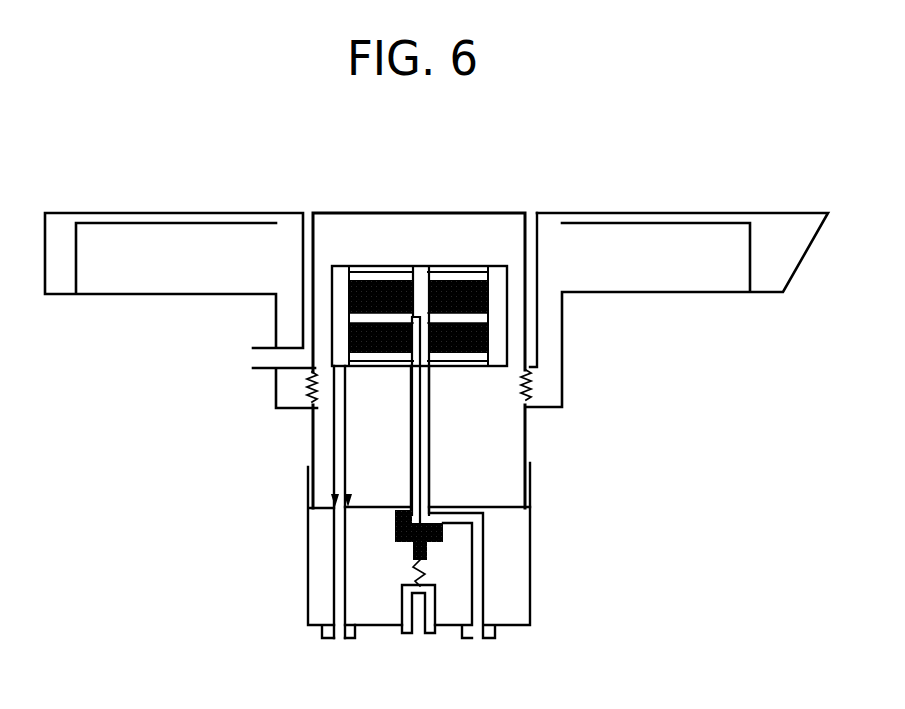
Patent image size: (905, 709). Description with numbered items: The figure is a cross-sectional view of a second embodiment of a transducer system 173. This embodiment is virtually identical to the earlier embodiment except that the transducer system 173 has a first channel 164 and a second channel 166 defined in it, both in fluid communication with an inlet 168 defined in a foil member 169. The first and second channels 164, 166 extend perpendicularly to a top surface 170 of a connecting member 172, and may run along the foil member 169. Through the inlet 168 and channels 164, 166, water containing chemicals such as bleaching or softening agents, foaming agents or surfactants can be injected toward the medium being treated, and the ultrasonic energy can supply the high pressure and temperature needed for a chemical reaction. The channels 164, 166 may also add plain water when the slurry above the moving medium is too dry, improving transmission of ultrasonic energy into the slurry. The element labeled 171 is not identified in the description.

The first channel 164 is at (307, 212).
The second channel 166 is at (530, 218).
The inlet 168 is at (300, 358).
The foil member 169 is at (550, 228).
The top surface 170 is at (432, 213).
The spring 171 is at (290, 362).
The connecting member 172 is at (375, 240).
The transducer system 173 is at (502, 432).